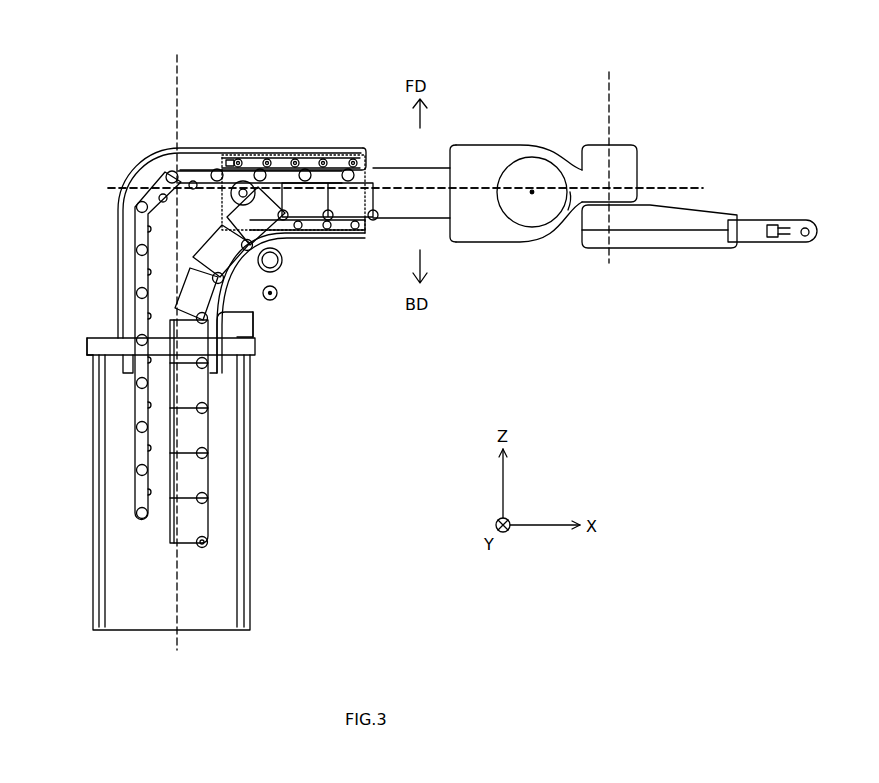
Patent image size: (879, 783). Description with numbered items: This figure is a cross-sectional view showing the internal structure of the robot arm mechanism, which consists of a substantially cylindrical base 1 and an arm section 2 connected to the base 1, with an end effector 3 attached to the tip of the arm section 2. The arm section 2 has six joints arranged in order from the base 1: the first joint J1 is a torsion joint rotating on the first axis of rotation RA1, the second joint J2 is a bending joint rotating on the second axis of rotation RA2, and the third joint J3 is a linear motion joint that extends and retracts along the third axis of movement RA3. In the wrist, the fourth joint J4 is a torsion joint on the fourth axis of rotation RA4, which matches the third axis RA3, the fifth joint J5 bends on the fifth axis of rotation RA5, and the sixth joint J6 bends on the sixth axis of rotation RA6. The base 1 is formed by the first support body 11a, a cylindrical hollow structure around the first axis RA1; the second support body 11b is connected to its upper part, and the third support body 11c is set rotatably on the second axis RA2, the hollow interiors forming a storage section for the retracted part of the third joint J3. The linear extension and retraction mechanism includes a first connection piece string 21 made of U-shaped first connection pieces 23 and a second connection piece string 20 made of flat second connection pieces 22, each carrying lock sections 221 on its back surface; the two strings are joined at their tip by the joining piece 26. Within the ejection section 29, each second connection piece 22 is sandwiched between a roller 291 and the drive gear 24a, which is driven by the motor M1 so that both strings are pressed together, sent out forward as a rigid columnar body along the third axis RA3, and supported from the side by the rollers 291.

The base 1 is at (82, 546).
The arm section 2 is at (383, 166).
The end effector 3 is at (662, 258).
The first support body 11a is at (250, 600).
The second support body 11b is at (117, 243).
The third support body 11c is at (315, 150).
The second connection piece string 20 is at (127, 476).
The first connection piece string 21 is at (212, 477).
The second connection piece 22 is at (138, 438).
The lock section 221 is at (138, 408).
The first connection piece 23 is at (208, 430).
The drive gear 24a is at (168, 173).
The joining piece 26 is at (447, 168).
The ejection section 29 is at (293, 148).
The roller 291 is at (238, 150).
The first joint J1 is at (96, 336).
The second joint J2 is at (280, 312).
The third joint J3 is at (405, 225).
The fourth joint J4 is at (515, 143).
The fifth joint J5 is at (547, 224).
The sixth joint J6 is at (644, 152).
The motor M1 is at (283, 262).
The first axis of rotation RA1 is at (176, 343).
The second axis of rotation RA2 is at (278, 297).
The third axis of movement RA3 is at (441, 187).
The fourth axis of rotation RA4 is at (423, 187).
The fifth axis of rotation RA5 is at (532, 194).
The sixth axis of rotation RA6 is at (606, 157).